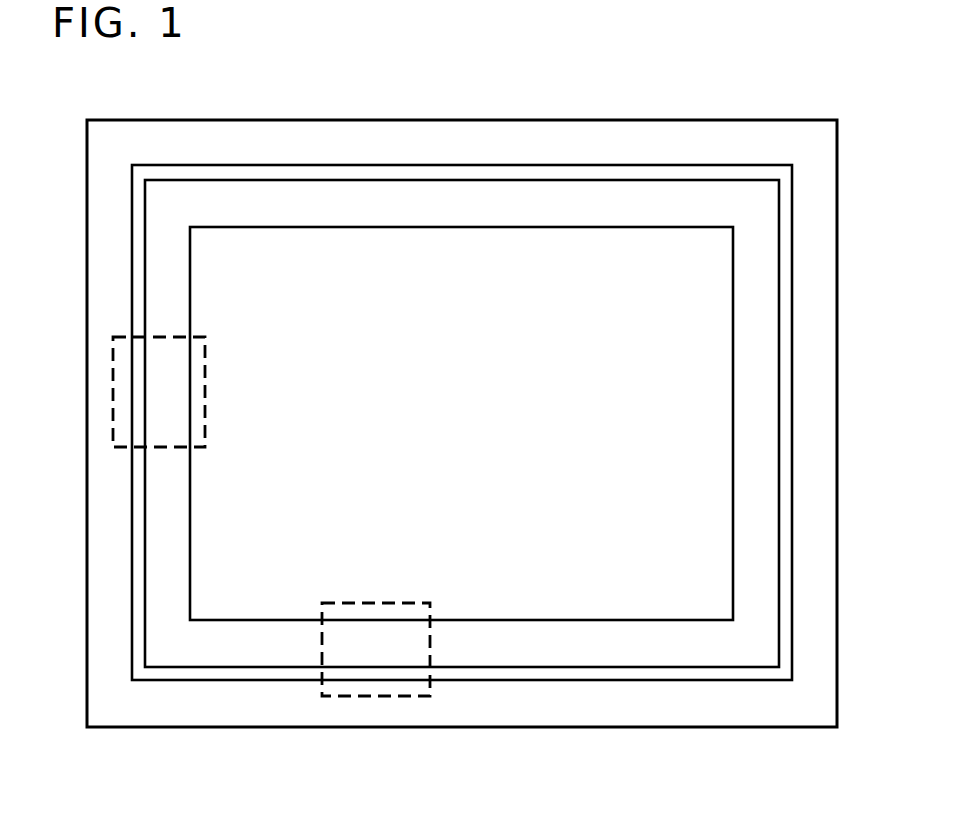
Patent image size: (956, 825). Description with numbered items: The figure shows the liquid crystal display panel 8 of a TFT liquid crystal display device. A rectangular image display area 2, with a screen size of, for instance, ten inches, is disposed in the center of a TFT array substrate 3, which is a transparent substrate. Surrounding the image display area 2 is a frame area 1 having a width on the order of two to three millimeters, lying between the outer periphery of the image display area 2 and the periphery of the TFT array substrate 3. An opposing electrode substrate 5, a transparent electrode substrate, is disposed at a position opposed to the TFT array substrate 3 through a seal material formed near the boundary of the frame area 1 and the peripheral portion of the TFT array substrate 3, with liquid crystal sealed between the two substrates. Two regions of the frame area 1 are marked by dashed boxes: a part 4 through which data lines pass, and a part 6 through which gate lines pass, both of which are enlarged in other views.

The frame area 1 is at (263, 203).
The image display area 2 is at (471, 442).
The TFT array substrate 3 is at (547, 122).
The part of the frame area 4 is at (358, 696).
The opposing electrode substrate 5 is at (397, 160).
The part of the frame area 6 is at (115, 392).
The liquid crystal display panel 8 is at (698, 84).